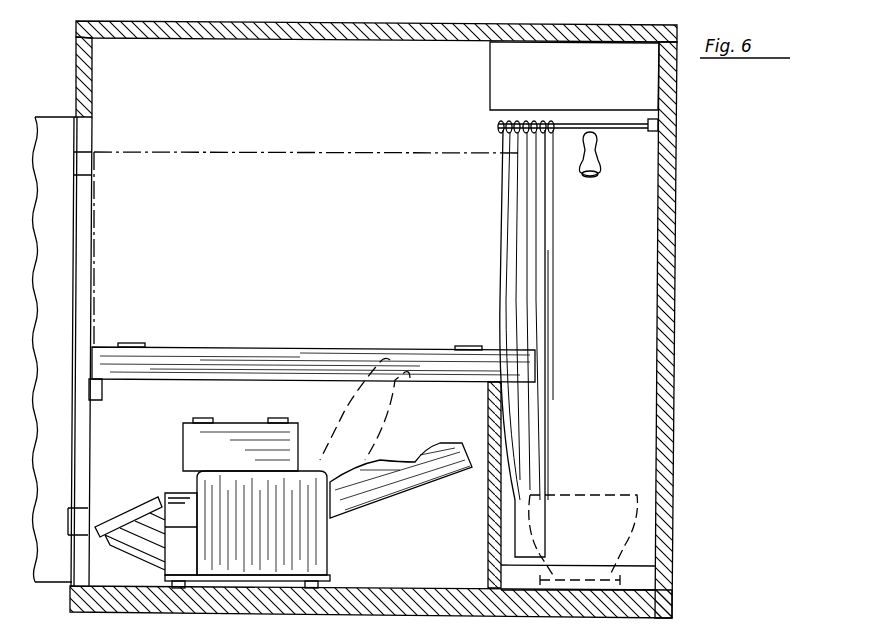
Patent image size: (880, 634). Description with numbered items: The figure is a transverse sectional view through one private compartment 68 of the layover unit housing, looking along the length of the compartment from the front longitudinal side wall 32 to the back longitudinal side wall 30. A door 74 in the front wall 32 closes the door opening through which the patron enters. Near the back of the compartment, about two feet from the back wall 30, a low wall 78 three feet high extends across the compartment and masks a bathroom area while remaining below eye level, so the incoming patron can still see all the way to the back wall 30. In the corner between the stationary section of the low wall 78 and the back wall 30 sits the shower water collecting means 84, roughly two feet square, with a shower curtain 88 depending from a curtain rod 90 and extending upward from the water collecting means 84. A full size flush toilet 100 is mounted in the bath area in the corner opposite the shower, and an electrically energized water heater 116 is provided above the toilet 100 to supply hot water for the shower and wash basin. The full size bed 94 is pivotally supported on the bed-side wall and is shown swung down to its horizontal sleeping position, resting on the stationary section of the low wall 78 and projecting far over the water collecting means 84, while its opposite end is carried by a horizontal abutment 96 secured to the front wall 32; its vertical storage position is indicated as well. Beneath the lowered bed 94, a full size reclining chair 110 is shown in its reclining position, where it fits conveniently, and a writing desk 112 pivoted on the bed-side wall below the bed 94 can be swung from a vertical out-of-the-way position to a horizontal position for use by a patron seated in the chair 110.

The longitudinal side wall 30 is at (680, 232).
The longitudinal side wall 32 is at (80, 94).
The private compartment 68 is at (108, 50).
The door 74 is at (66, 225).
The low wall 78 is at (486, 516).
The shower water collecting means 84 is at (640, 572).
The shower curtain 88 is at (545, 240).
The curtain rod 90 is at (620, 130).
The bed 94 is at (354, 150).
The horizontal abutment 96 is at (102, 400).
The flush toilet 100 is at (655, 480).
The reclining chair 110 is at (318, 538).
The writing desk 112 is at (243, 440).
The water heater 116 is at (640, 90).